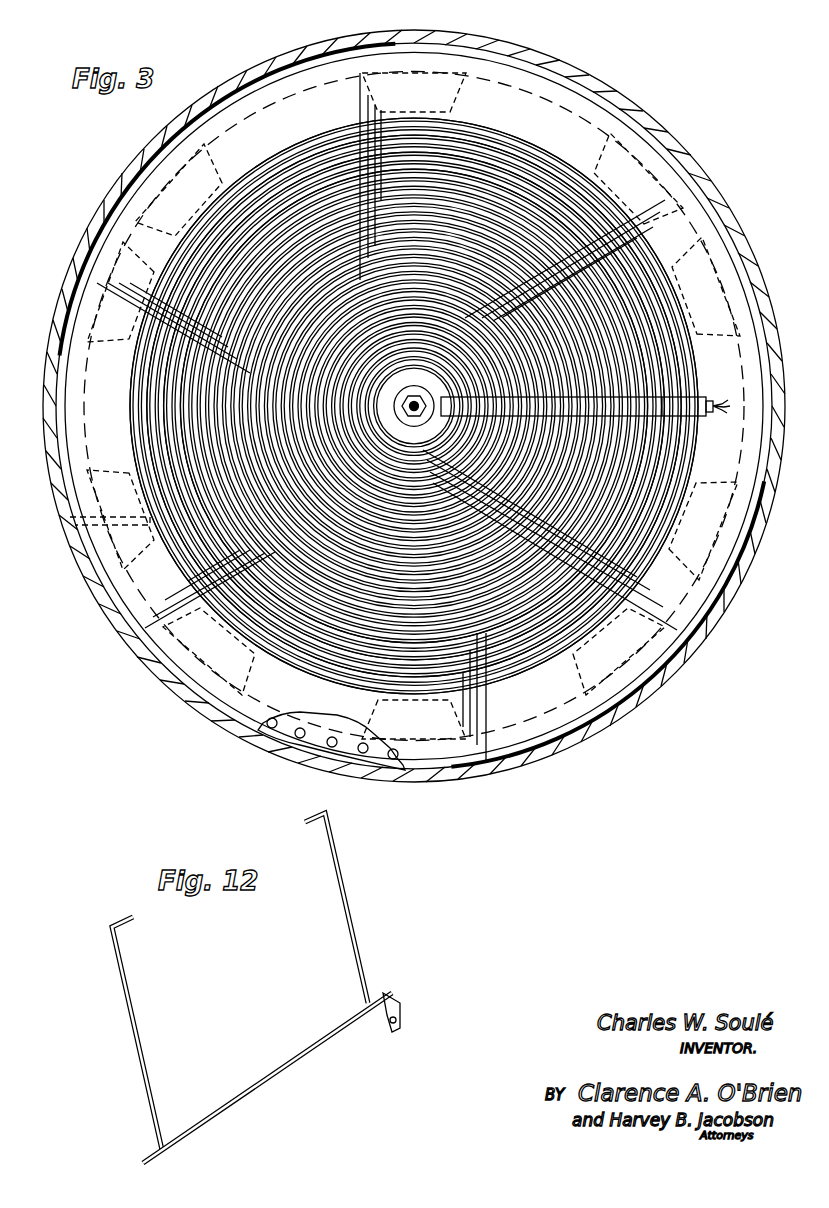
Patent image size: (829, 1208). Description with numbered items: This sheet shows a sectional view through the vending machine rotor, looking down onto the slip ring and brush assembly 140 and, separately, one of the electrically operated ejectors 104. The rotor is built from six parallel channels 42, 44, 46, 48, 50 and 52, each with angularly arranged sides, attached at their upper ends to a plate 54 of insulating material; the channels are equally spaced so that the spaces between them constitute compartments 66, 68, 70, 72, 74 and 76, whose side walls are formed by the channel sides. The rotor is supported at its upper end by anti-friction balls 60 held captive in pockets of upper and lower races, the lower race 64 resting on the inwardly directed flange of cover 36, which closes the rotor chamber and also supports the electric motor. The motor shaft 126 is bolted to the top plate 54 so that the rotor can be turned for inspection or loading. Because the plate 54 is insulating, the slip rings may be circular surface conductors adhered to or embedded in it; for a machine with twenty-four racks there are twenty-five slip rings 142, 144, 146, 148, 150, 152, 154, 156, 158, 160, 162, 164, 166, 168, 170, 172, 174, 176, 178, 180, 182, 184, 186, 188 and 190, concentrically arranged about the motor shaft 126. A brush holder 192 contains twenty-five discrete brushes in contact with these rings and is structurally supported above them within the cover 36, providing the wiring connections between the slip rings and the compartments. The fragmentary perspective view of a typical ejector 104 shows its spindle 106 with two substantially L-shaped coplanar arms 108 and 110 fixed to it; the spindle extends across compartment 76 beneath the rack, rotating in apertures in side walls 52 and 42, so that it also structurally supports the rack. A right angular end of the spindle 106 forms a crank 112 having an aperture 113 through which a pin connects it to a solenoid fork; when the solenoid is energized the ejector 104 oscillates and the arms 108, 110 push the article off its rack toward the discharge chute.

In FIG. 3, the cover 36 is at (580, 78).
In FIG. 3, the channel 42 is at (145, 152).
In FIG. 3, the channel 44 is at (495, 44).
In FIG. 3, the channel 46 is at (715, 278).
In FIG. 3, the channel 48 is at (752, 542).
In FIG. 3, the channel 50 is at (414, 719).
In FIG. 3, the channel 52 is at (72, 545).
In FIG. 3, the plate 54 is at (638, 692).
In FIG. 3, the balls 60 is at (332, 762).
In FIG. 3, the lower race 64 is at (275, 747).
In FIG. 3, the compartment 66 is at (248, 110).
In FIG. 3, the compartment 68 is at (648, 133).
In FIG. 3, the compartment 70 is at (765, 325).
In FIG. 3, the compartment 72 is at (572, 742).
In FIG. 3, the compartment 74 is at (190, 700).
In FIG. 3, the compartment 76 is at (60, 480).
In FIG. 3, the motor shaft 126 is at (415, 400).
In FIG. 3, the slip ring and brush assembly 140 is at (680, 396).
In FIG. 3, the slip ring 142 is at (490, 680).
In FIG. 3, the slip ring 144 is at (515, 660).
In FIG. 3, the slip ring 146 is at (545, 640).
In FIG. 3, the slip ring 148 is at (570, 625).
In FIG. 3, the slip ring 150 is at (595, 600).
In FIG. 3, the slip ring 152 is at (225, 545).
In FIG. 3, the slip ring 154 is at (232, 530).
In FIG. 3, the slip ring 156 is at (232, 510).
In FIG. 3, the slip ring 158 is at (235, 482).
In FIG. 3, the slip ring 160 is at (235, 322).
In FIG. 3, the slip ring 162 is at (258, 305).
In FIG. 3, the slip ring 164 is at (280, 288).
In FIG. 3, the slip ring 166 is at (318, 268).
In FIG. 3, the slip ring 168 is at (390, 245).
In FIG. 3, the slip ring 170 is at (432, 243).
In FIG. 3, the slip ring 172 is at (450, 250).
In FIG. 3, the slip ring 174 is at (445, 285).
In FIG. 3, the slip ring 176 is at (505, 300).
In FIG. 3, the slip ring 178 is at (515, 320).
In FIG. 3, the slip ring 180 is at (520, 338).
In FIG. 3, the slip ring 182 is at (500, 372).
In FIG. 3, the slip ring 184 is at (348, 370).
In FIG. 3, the slip ring 186 is at (332, 432).
In FIG. 3, the slip ring 188 is at (428, 458).
In FIG. 3, the slip ring 190 is at (455, 432).
In FIG. 3, the brush holder 192 is at (683, 418).
In FIG. 12, the electrically operated ejector 104 is at (269, 988).
In FIG. 12, the spindle 106 is at (248, 1092).
In FIG. 12, the arm 108 is at (342, 882).
In FIG. 12, the arm 110 is at (135, 1022).
In FIG. 12, the crank 112 is at (392, 998).
In FIG. 12, the aperture 113 is at (385, 1027).